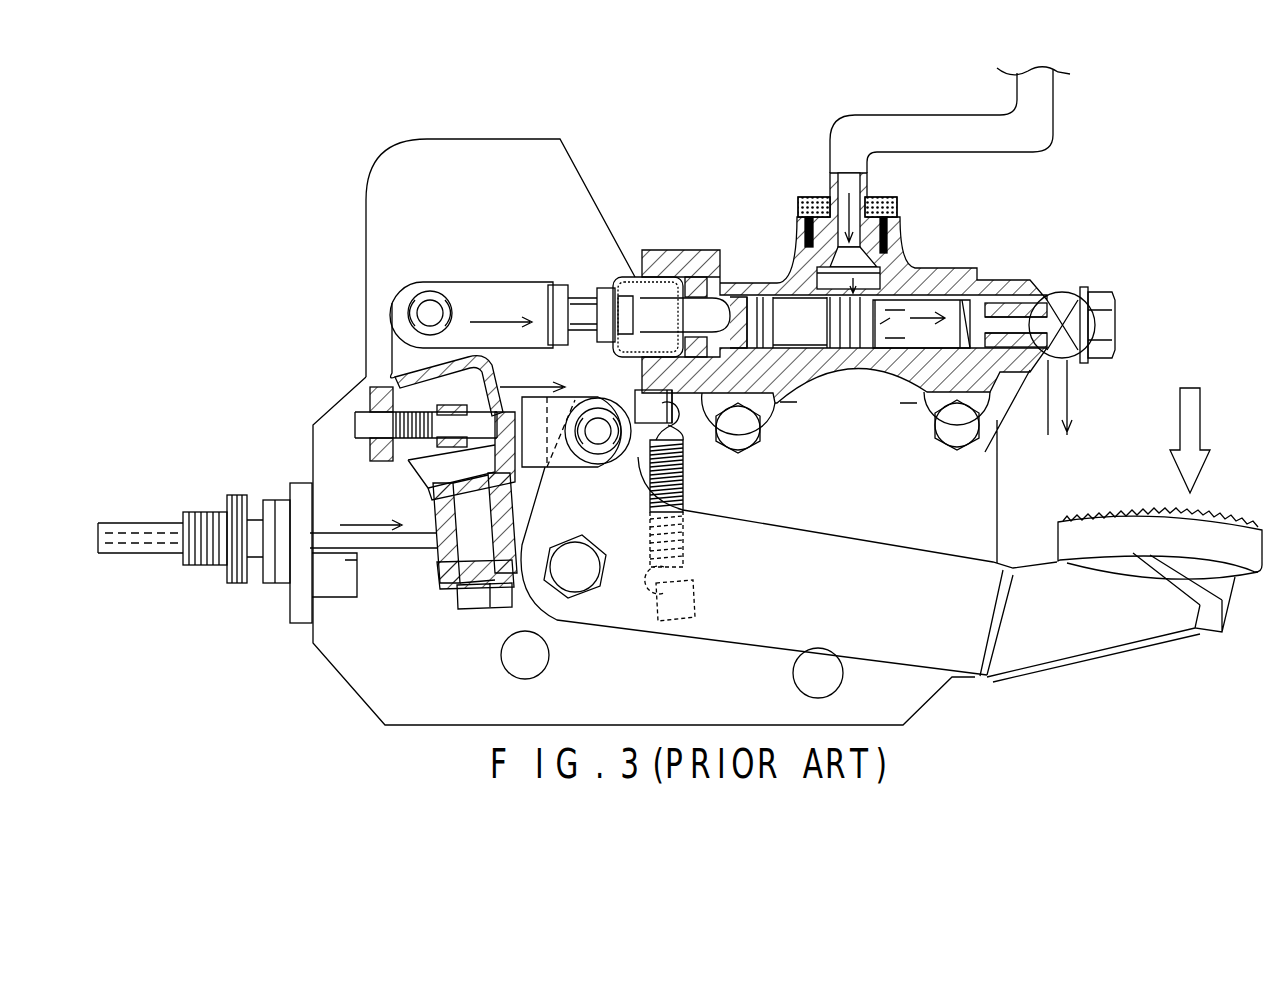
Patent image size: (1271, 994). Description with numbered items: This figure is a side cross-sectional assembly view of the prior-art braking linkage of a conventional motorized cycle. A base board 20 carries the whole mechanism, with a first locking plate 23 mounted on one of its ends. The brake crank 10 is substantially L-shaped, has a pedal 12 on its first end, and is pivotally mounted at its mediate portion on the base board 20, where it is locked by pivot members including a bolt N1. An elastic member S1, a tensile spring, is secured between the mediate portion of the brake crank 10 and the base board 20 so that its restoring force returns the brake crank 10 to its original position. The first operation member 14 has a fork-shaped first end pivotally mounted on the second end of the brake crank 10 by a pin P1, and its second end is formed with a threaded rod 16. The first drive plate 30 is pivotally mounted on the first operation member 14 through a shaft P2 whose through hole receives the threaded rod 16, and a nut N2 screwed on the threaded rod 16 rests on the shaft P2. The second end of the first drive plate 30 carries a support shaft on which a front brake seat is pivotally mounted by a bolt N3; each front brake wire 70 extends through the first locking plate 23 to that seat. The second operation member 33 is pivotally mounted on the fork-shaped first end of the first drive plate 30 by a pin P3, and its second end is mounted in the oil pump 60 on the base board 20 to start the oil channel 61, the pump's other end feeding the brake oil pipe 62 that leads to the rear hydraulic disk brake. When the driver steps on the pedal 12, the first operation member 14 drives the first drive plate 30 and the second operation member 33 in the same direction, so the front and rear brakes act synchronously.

The brake crank 10 is at (732, 630).
The pedal 12 is at (1222, 513).
The first operation member 14 is at (425, 473).
The threaded rod 16 is at (370, 423).
The base board 20 is at (497, 158).
The first locking plate 23 is at (290, 610).
The first drive plate 30 is at (392, 362).
The second operation member 33 is at (670, 310).
The oil pump 60 is at (763, 263).
The oil channel 61 is at (1013, 325).
The brake oil pipe 62 is at (1052, 437).
The front brake wire 70 is at (133, 523).
The bolt N1 is at (574, 585).
The nut N2 is at (370, 447).
The bolt N3 is at (485, 605).
The pin P1 is at (598, 431).
The shaft P2 is at (531, 365).
The pin P3 is at (428, 300).
The elastic member S1 is at (650, 485).